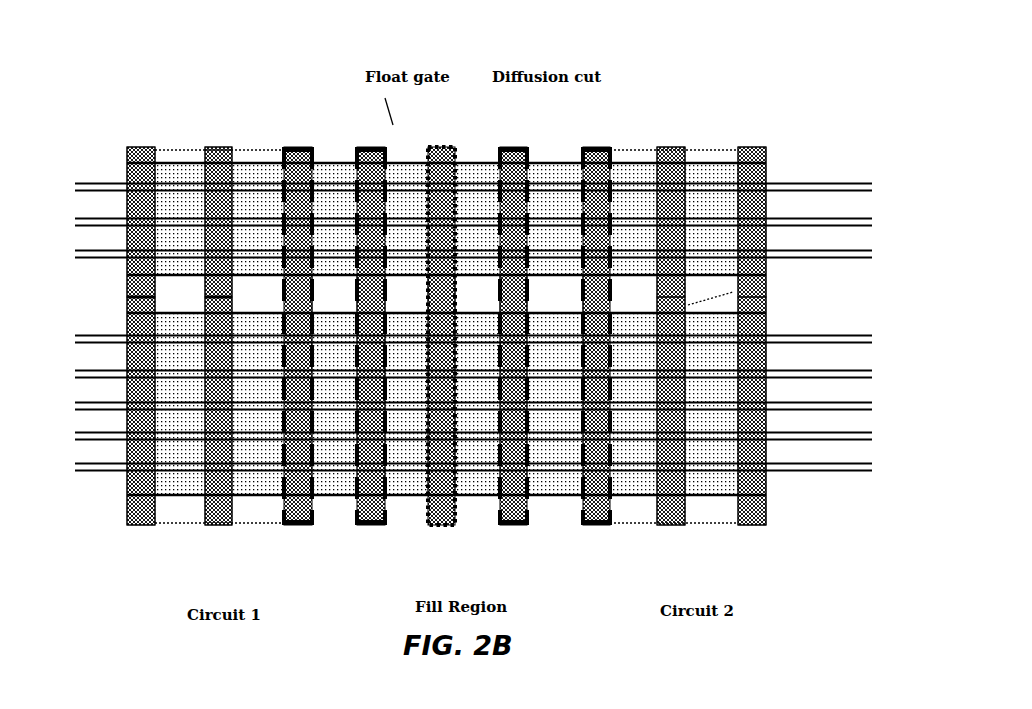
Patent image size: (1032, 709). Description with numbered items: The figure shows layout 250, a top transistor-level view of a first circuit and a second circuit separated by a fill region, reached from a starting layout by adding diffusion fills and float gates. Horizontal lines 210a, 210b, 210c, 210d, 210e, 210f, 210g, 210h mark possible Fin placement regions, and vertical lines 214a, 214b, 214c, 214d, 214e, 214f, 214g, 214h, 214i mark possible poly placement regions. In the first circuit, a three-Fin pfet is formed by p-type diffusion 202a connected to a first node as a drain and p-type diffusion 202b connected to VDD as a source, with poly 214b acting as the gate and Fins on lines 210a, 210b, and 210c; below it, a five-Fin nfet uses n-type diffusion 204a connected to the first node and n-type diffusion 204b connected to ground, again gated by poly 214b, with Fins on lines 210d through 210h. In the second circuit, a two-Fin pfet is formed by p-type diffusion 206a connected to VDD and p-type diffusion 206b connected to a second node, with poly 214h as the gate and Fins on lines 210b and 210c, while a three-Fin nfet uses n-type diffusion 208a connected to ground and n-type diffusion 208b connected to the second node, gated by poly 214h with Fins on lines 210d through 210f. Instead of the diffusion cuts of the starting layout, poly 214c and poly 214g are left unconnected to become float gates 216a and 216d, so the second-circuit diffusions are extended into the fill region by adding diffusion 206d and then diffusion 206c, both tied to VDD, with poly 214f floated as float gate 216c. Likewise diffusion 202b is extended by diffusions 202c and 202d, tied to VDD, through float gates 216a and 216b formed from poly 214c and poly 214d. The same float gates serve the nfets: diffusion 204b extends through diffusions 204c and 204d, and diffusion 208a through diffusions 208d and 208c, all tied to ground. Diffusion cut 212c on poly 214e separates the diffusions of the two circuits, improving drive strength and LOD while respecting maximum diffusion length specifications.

The layout 250 is at (110, 52).
The p-type diffusion 202a is at (198, 148).
The p-type diffusion 202b is at (272, 148).
The diffusion 202c is at (334, 294).
The diffusion 202d is at (406, 294).
The n-type diffusion 204a is at (190, 480).
The n-type diffusion 204b is at (268, 480).
The diffusion 204c is at (336, 470).
The diffusion 204d is at (413, 470).
The p-type diffusion 206a is at (652, 195).
The p-type diffusion 206b is at (720, 195).
The diffusion 206c is at (477, 294).
The diffusion region 206d is at (555, 294).
The n-type diffusion 208a is at (645, 408).
The n-type diffusion 208b is at (716, 408).
The diffusion 208c is at (486, 413).
The diffusion 208d is at (559, 413).
The Fin line 210a is at (841, 185).
The Fin line 210b is at (841, 220).
The Fin line 210c is at (841, 252).
The Fin line 210d is at (841, 337).
The Fin line 210e is at (841, 372).
The Fin line 210f is at (841, 404).
The Fin line 210g is at (841, 434).
The Fin line 210h is at (841, 465).
The diffusion cut 212c is at (443, 143).
The poly 214a is at (155, 238).
The poly 214b is at (232, 238).
The poly 214c is at (312, 238).
The poly 214d is at (385, 238).
The poly 214e is at (455, 238).
The poly 214f is at (527, 238).
The poly 214g is at (610, 238).
The poly 214h is at (685, 238).
The poly 214i is at (766, 238).
The float gate 216a is at (393, 125).
The float gate 216b is at (380, 113).
The float gate 216c is at (393, 125).
The float gate 216d is at (396, 127).